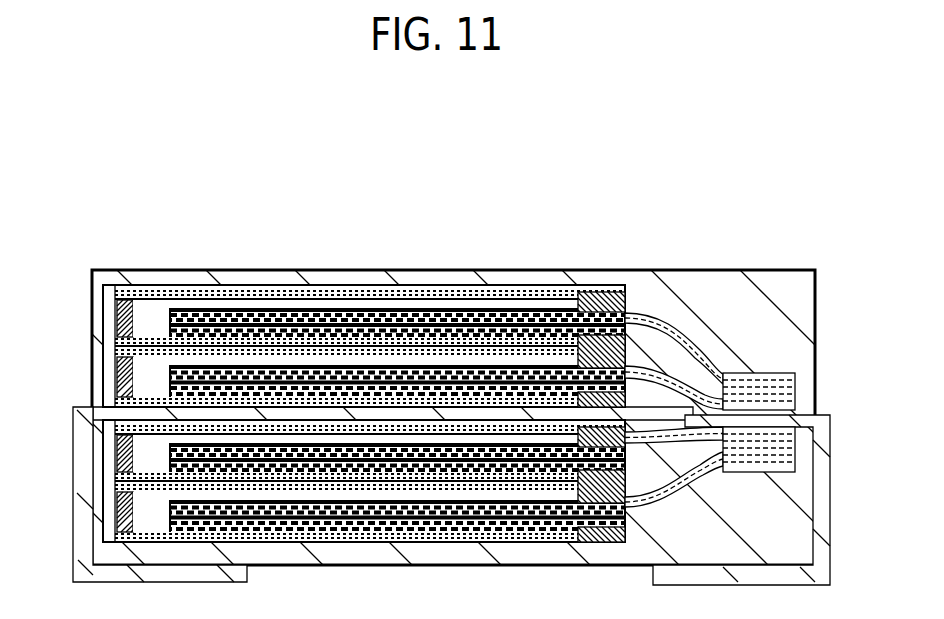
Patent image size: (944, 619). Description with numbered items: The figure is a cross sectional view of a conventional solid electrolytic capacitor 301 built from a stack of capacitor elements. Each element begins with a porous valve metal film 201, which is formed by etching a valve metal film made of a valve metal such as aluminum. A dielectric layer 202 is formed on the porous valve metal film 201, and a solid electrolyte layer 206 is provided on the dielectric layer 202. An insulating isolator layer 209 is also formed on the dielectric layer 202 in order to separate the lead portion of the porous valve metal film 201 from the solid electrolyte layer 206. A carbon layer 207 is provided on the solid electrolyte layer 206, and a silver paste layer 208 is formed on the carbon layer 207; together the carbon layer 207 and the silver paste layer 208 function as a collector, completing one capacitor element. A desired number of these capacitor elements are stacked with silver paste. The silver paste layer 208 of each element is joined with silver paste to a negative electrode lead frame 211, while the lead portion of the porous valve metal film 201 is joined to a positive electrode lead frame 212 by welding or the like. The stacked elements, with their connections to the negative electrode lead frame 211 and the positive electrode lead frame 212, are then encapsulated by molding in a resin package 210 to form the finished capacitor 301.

The porous valve metal film 201 is at (378, 308).
The dielectric layer 202 is at (262, 322).
The solid electrolyte layer 206 is at (166, 306).
The carbon layer 207 is at (118, 330).
The silver paste layer 208 is at (160, 322).
The insulating isolator layer 209 is at (603, 300).
The resin package 210 is at (742, 312).
The negative electrode lead frame 211 is at (82, 527).
The positive electrode lead frame 212 is at (826, 472).
The solid electrolytic capacitor 301 is at (705, 199).